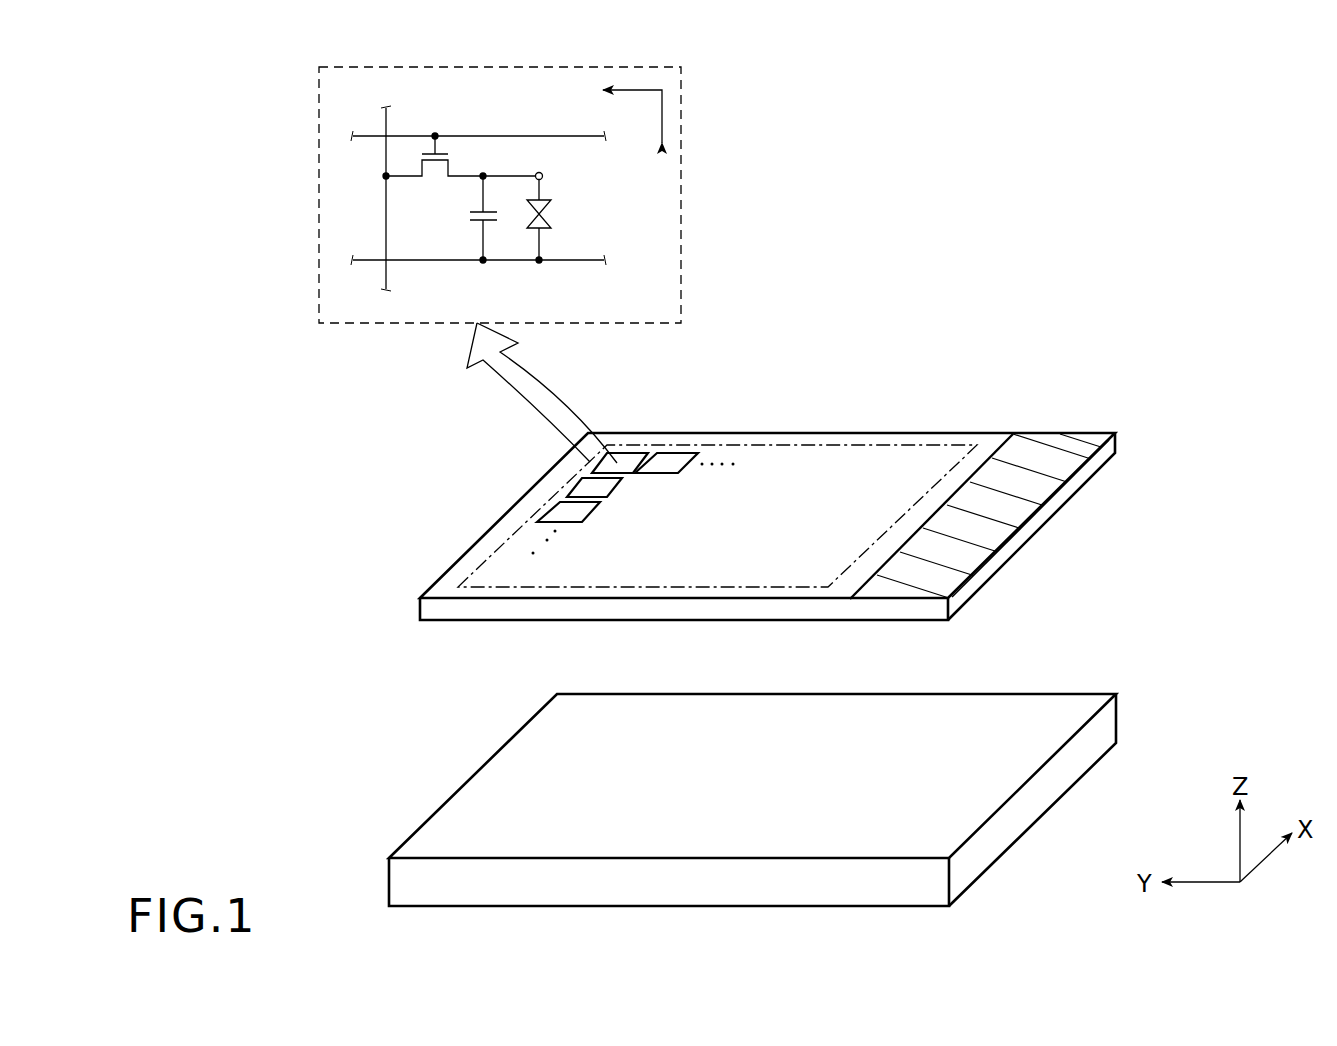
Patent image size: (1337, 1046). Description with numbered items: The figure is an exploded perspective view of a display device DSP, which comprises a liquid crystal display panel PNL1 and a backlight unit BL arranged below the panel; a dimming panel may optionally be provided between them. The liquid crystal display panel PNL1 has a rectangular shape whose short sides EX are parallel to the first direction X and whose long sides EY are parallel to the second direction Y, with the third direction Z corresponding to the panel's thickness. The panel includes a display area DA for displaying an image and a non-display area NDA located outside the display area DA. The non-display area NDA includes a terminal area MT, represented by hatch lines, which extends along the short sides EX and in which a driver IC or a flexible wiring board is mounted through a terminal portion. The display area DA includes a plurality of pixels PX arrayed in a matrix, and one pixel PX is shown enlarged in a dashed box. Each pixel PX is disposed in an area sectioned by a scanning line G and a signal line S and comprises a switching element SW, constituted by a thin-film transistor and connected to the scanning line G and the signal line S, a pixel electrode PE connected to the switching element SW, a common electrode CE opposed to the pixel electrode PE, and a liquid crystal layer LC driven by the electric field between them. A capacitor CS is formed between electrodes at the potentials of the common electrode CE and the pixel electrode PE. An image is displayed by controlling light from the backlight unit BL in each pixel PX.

The pixel PX is at (681, 118).
The scanning line G is at (372, 133).
The signal line S is at (386, 207).
The switching element SW is at (462, 165).
The pixel electrode PE is at (543, 173).
The capacitor CS is at (467, 220).
The liquid crystal layer LC is at (557, 213).
The common electrode CE is at (567, 263).
The liquid crystal display panel PNL1 is at (420, 612).
The display device DSP is at (485, 488).
The display area DA is at (728, 443).
The non-display area NDA is at (907, 440).
The terminal area MT is at (1047, 432).
The short side EX is at (1097, 465).
The long side EY is at (742, 608).
The backlight unit BL is at (389, 880).